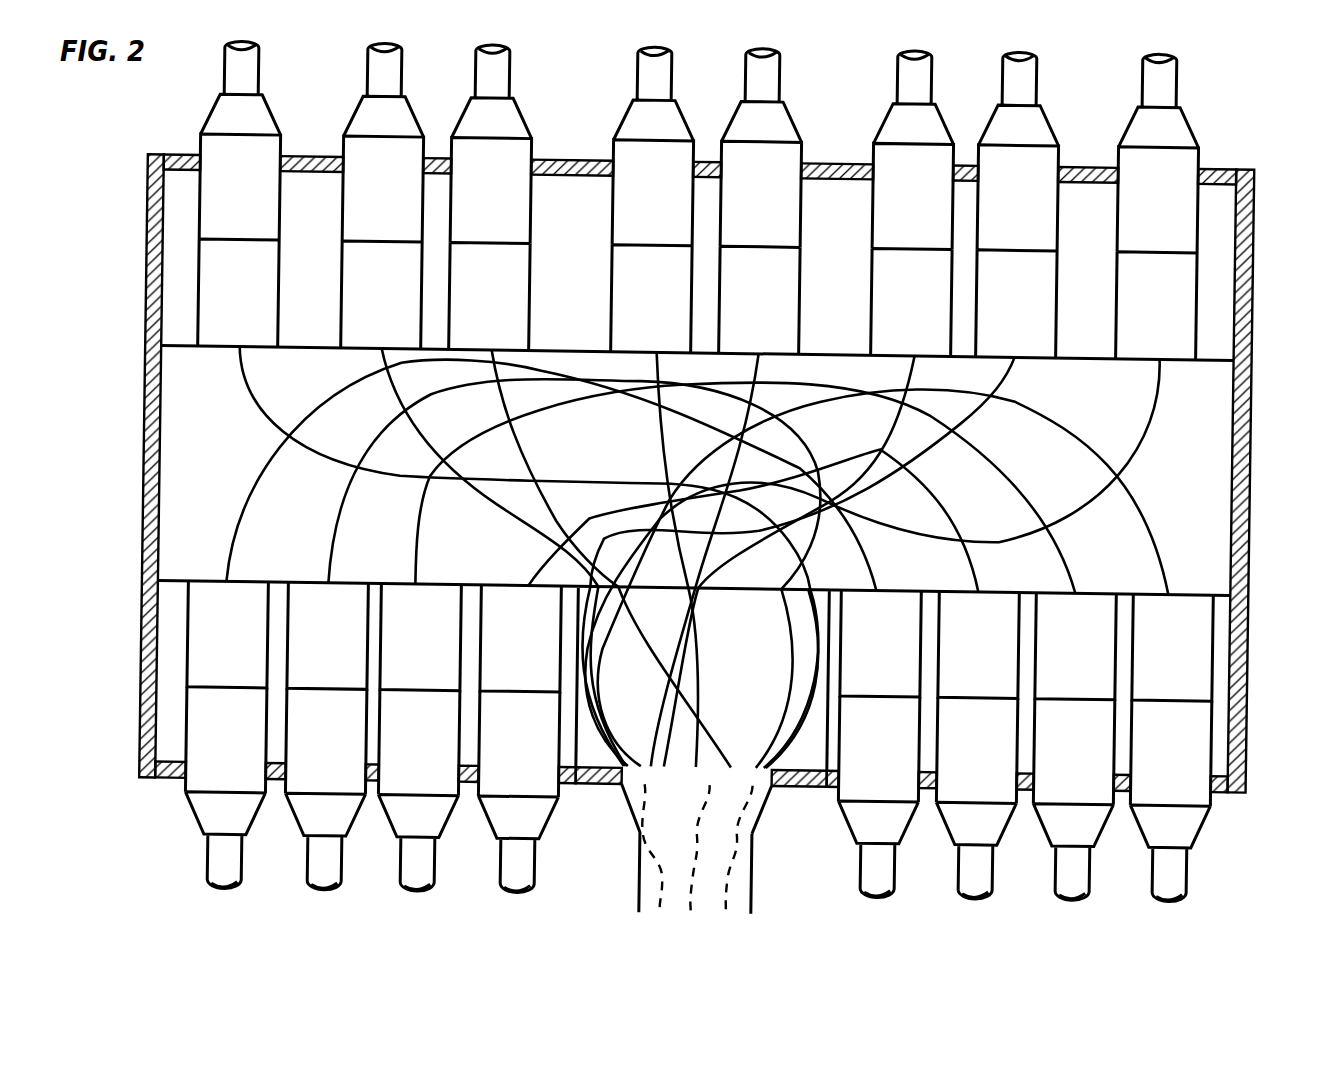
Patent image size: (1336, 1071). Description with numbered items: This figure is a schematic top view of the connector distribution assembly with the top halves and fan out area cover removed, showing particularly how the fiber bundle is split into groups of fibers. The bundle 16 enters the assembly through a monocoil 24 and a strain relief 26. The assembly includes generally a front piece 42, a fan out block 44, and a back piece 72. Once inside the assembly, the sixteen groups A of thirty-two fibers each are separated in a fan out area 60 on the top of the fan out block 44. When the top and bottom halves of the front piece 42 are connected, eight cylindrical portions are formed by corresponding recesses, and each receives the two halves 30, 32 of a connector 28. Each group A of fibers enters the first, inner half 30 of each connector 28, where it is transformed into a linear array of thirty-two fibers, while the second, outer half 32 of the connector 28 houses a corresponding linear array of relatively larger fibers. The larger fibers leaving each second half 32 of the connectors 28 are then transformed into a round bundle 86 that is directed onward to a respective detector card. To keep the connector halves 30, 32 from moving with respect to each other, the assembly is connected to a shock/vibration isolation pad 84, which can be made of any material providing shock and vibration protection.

The bundle 16 is at (666, 871).
The monocoil 24 is at (758, 892).
The strain relief 26 is at (765, 826).
The connector 28 is at (513, 158).
The first, inner half 30 is at (1178, 313).
The second, outer half 32 is at (1183, 215).
The front piece 42 is at (1225, 672).
The fan out block 44 is at (171, 560).
The fan out area 60 is at (125, 463).
The back piece 72 is at (1210, 276).
The shock/vibration isolation pad 84 is at (171, 162).
The round bundle 86 is at (755, 82).
The groups of fibers A is at (1002, 374).